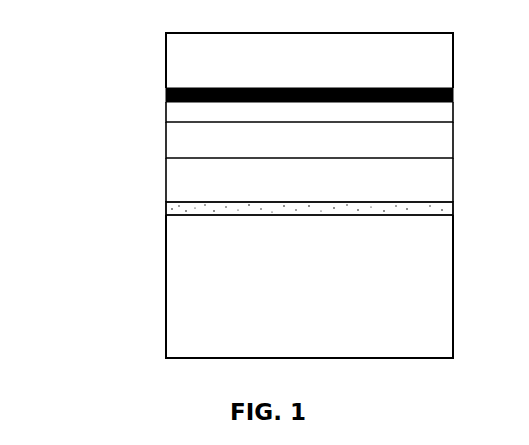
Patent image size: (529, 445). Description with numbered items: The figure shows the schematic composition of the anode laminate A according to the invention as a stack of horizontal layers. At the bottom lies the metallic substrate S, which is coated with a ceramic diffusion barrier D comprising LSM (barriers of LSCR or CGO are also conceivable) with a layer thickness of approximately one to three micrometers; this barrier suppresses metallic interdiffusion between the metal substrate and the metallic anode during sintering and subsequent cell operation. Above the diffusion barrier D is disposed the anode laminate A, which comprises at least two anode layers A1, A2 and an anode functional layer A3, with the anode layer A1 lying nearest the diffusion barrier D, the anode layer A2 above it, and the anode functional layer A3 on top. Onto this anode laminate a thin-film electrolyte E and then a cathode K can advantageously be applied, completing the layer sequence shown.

The cathode K is at (424, 53).
The thin-film electrolyte E is at (424, 95).
The anode laminate A is at (235, 152).
The anode functional layer A3 is at (193, 115).
The anode layer A2 is at (193, 144).
The anode layer A1 is at (193, 179).
The diffusion barrier D is at (424, 208).
The metallic substrate S is at (424, 292).